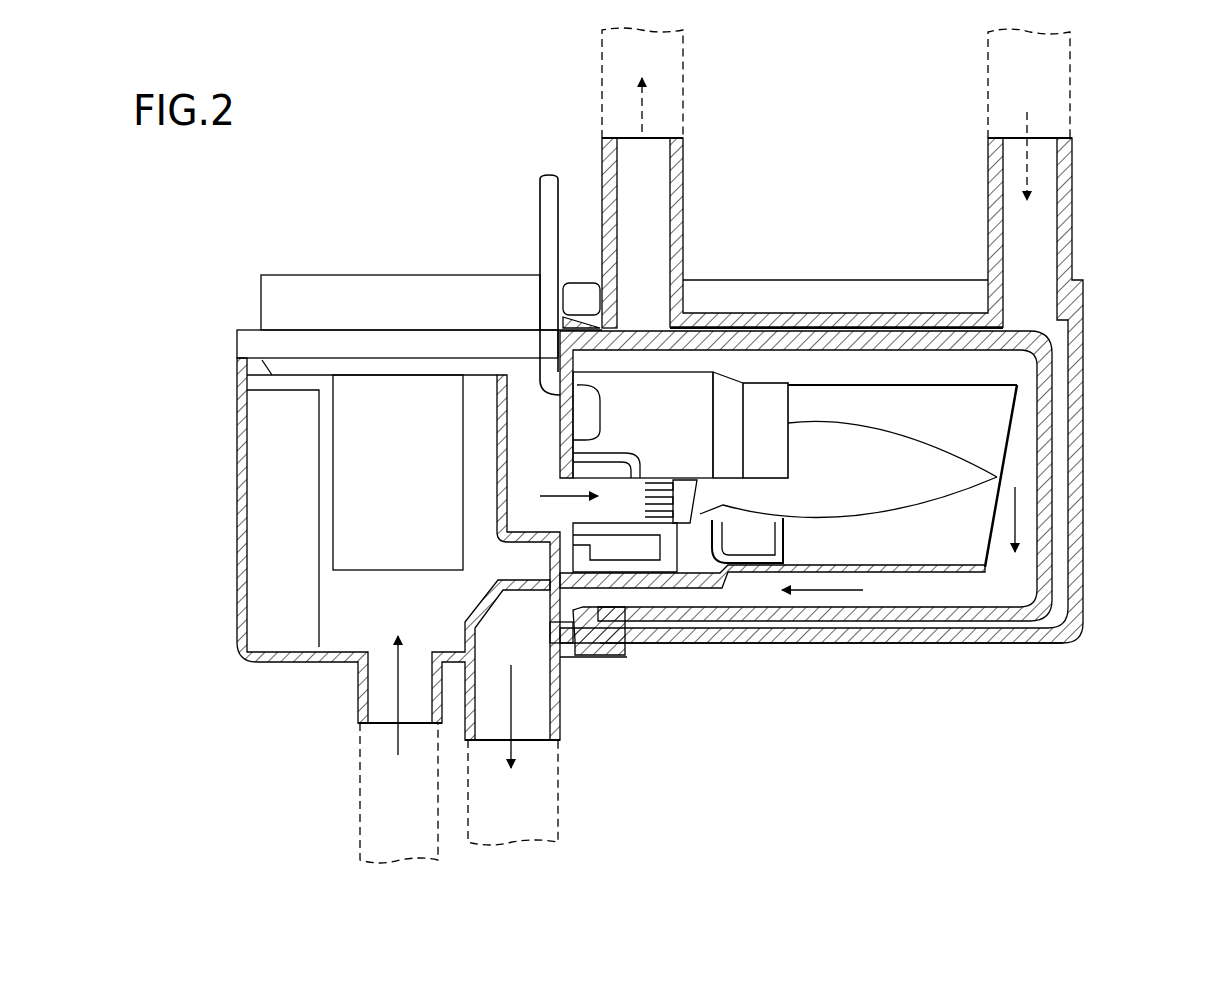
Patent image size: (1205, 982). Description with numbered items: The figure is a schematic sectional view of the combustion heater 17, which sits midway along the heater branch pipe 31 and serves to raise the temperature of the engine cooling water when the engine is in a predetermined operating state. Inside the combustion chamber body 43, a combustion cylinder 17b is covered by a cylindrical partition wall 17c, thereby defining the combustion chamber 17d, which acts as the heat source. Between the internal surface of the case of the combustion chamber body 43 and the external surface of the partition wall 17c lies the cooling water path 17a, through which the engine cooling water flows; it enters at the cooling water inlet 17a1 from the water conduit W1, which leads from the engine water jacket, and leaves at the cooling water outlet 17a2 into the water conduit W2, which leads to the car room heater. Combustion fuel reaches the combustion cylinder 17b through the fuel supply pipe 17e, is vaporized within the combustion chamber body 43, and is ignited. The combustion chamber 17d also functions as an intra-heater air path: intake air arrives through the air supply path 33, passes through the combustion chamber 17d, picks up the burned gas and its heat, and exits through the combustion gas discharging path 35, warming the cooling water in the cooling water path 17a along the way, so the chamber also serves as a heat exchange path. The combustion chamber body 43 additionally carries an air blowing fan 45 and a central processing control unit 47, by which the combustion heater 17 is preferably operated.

The combustion heater 17 is at (846, 182).
The cooling water path 17a is at (846, 326).
The cooling water inlet 17a1 is at (1073, 181).
The cooling water outlet 17a2 is at (684, 168).
The combustion cylinder 17b is at (768, 388).
The partition wall 17c is at (1050, 455).
The combustion chamber 17d is at (967, 377).
The fuel supply pipe 17e is at (540, 207).
The combustion chamber body 43 is at (913, 647).
The air blowing fan 45 is at (357, 278).
The central processing control unit (CPU) 47 is at (250, 462).
The air supply path 33 is at (358, 812).
The heater branch pipe 31 is at (399, 793).
The combustion gas discharging path 35 is at (558, 803).
The water conduit W1 is at (1073, 62).
The water conduit W2 is at (602, 40).